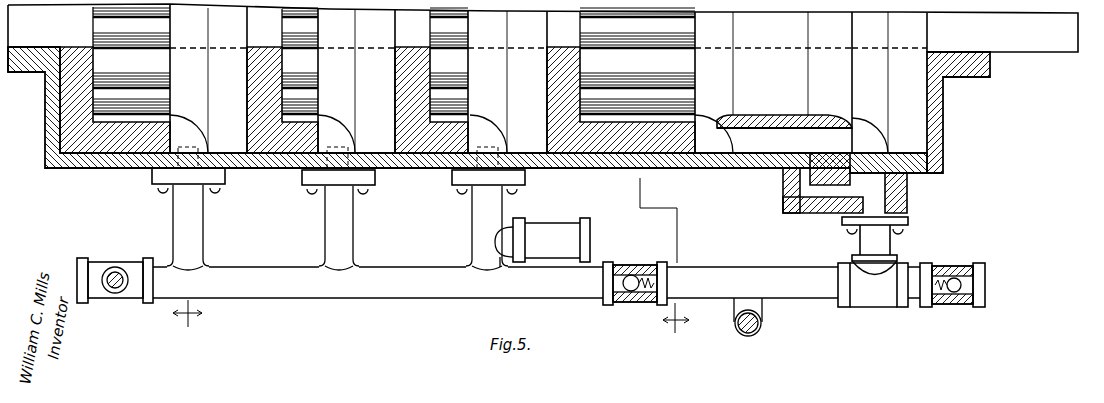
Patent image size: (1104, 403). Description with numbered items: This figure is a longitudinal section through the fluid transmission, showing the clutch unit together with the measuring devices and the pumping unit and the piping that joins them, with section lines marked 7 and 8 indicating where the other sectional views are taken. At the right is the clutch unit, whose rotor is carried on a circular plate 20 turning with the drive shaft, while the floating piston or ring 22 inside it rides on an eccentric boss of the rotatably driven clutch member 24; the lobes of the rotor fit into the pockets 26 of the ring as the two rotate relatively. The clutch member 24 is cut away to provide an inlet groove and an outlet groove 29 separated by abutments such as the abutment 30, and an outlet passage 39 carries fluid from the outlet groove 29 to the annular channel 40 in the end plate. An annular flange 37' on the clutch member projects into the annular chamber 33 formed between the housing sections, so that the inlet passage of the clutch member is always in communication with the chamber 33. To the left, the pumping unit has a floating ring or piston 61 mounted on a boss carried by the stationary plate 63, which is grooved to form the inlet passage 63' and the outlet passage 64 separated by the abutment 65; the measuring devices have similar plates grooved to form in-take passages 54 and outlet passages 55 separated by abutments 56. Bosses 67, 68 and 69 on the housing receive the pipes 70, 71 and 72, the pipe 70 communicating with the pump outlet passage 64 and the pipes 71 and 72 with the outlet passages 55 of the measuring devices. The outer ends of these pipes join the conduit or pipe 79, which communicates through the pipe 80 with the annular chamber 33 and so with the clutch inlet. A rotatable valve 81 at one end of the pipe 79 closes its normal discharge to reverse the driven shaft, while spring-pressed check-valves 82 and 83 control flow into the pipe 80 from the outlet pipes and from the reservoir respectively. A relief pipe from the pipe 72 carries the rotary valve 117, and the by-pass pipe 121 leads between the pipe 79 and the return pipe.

The circular plate 20 is at (585, 150).
The floating piston or ring 22 is at (672, 67).
The floating ring or piston 61 is at (117, 97).
The plate 63 is at (208, 79).
The inlet passage 63' is at (209, 80).
The outlet passage 64 is at (185, 108).
The abutment 65 is at (195, 145).
The in-take passage 54 is at (341, 80).
The outlet passage 55 is at (344, 107).
The abutment 56 is at (340, 140).
The clutch member 24 is at (773, 82).
The pockets 26 is at (708, 45).
The outlet groove 29 is at (707, 77).
The abutment 30 is at (703, 133).
The outlet passage 39 is at (784, 131).
The annular channel 40 is at (889, 82).
The annular chamber 33 is at (802, 195).
The annular flange 37' is at (828, 196).
The boss 67 is at (153, 172).
The boss 68 is at (303, 174).
The boss 69 is at (452, 174).
The pipe 70 is at (197, 230).
The pipe 71 is at (348, 228).
The pipe 72 is at (473, 214).
The conduit or pipe 79 is at (387, 270).
The pipe 80 is at (880, 243).
The rotatable valve 81 is at (103, 263).
The check-valve 82 is at (634, 262).
The check-valve 83 is at (950, 266).
The rotary valve 117 is at (546, 232).
The by-pass pipe 121 is at (762, 324).
The section line 7 is at (187, 322).
The section line 8 is at (676, 329).